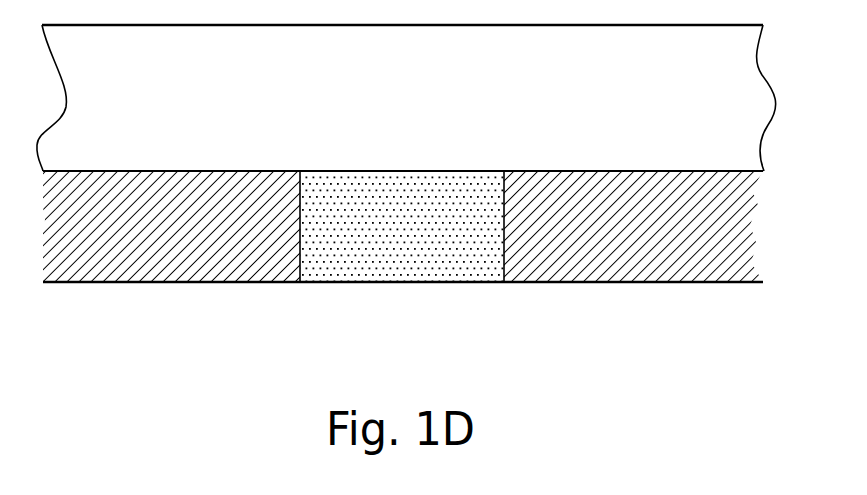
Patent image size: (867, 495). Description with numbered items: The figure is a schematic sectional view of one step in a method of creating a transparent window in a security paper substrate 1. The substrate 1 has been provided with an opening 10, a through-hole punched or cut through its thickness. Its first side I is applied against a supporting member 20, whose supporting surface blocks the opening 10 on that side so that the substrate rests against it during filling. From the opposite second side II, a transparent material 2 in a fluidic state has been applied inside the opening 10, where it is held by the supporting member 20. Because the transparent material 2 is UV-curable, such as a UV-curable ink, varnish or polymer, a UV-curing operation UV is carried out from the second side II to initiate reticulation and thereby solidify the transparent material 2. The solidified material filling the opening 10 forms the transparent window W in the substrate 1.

The supporting member 20 is at (121, 72).
The security paper substrate 1 is at (92, 262).
The transparent material 2 is at (475, 262).
The opening 10 is at (308, 227).
The transparent window W is at (448, 176).
The UV-curing operation UV is at (403, 297).
The first side I is at (683, 136).
The second side II is at (685, 321).